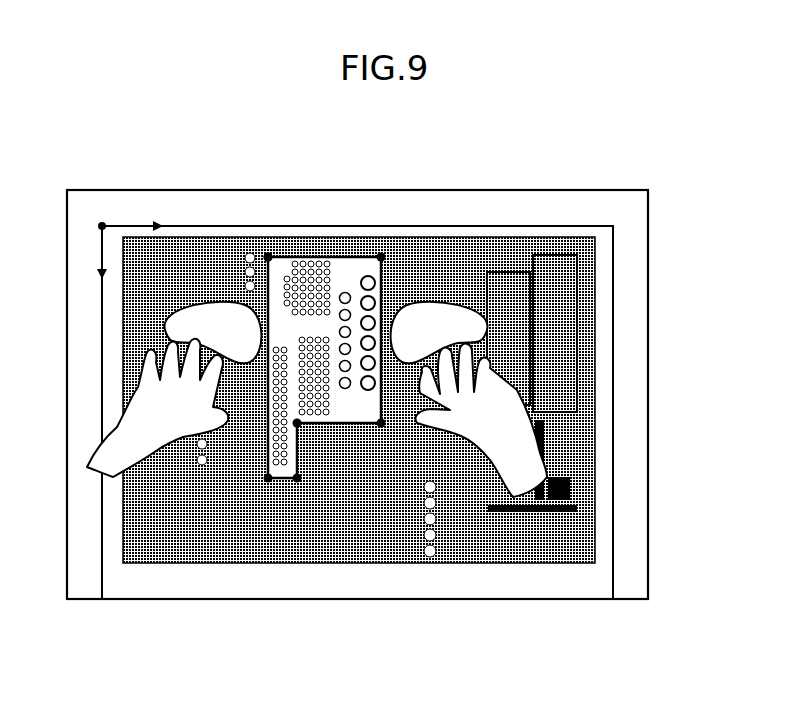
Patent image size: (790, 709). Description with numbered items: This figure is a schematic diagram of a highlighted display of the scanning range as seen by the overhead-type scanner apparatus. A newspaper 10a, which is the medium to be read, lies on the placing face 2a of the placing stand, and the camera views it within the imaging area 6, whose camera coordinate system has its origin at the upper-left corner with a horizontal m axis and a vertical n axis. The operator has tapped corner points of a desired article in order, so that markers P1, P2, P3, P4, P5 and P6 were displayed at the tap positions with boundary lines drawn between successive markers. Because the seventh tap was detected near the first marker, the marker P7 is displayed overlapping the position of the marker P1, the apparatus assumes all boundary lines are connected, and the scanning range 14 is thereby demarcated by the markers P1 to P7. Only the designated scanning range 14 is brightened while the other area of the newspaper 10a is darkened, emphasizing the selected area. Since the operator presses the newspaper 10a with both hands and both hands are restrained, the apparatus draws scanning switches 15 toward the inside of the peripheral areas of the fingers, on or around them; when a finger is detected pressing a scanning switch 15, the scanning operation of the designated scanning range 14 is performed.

The placing face 2a is at (506, 210).
The imaging area 6 is at (613, 497).
The newspaper 10a is at (580, 438).
The scanning range 14 is at (347, 284).
The scanning switch 15 is at (205, 305).
The marker P1 is at (268, 255).
The marker P2 is at (381, 255).
The marker P3 is at (381, 423).
The marker P4 is at (298, 425).
The marker P5 is at (297, 480).
The marker P6 is at (268, 480).
The marker P7 is at (268, 257).